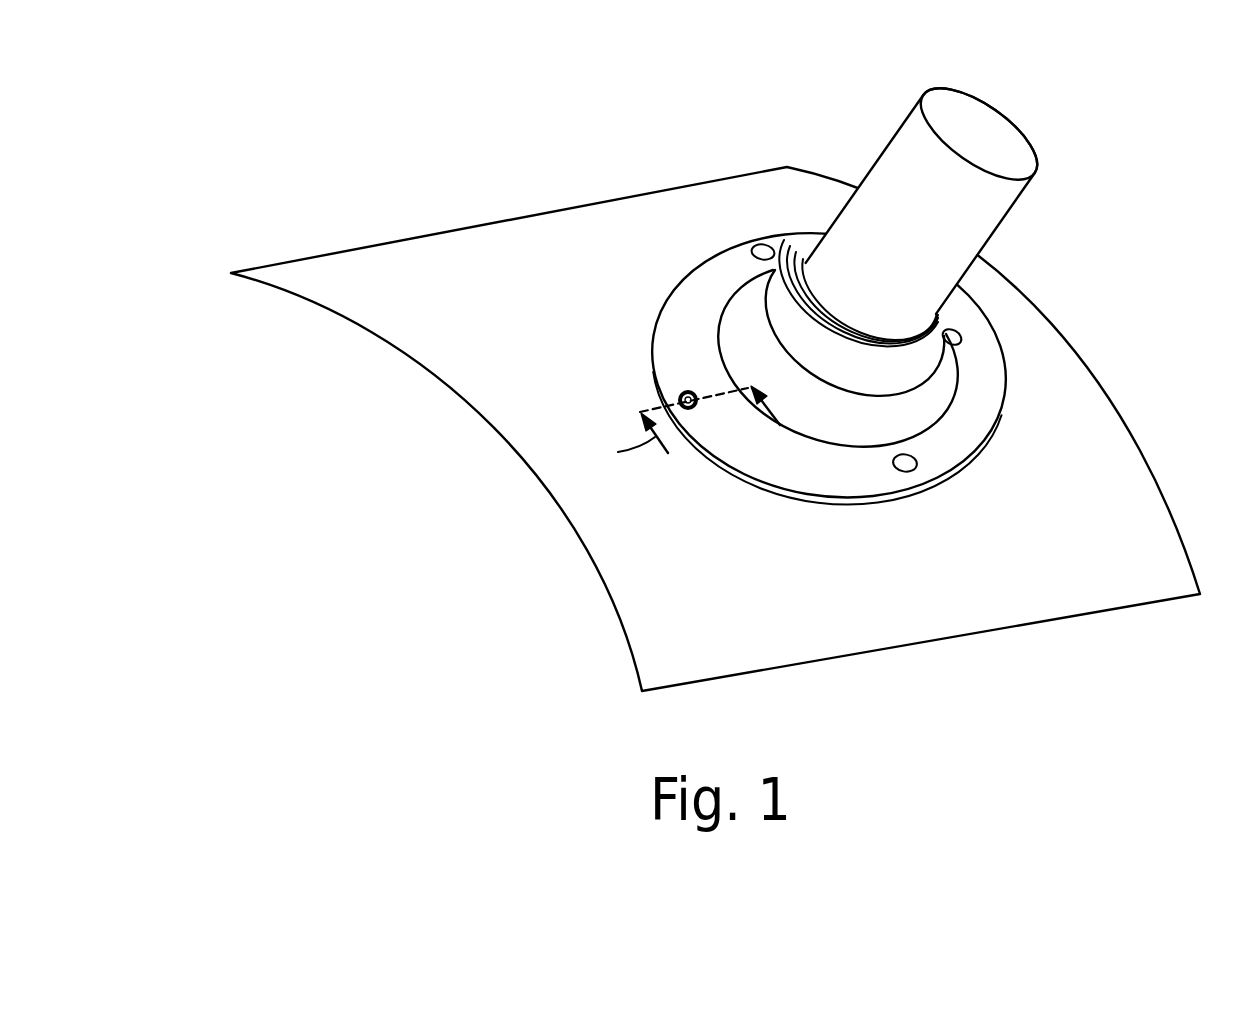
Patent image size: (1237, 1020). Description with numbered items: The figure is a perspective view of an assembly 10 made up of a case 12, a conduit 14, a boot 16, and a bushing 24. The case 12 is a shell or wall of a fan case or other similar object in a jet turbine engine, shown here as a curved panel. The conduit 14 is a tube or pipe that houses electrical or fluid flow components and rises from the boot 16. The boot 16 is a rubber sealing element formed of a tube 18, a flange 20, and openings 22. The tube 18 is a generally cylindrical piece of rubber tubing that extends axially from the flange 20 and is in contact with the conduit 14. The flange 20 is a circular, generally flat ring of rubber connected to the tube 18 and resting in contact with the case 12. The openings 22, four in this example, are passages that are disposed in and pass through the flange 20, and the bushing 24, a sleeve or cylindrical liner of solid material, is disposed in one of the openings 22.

The assembly 10 is at (646, 300).
The case 12 is at (518, 255).
The conduit 14 is at (897, 135).
The boot 16 is at (707, 273).
The tube 18 is at (893, 378).
The flange 20 is at (967, 424).
The openings 22 is at (770, 240).
The bushing 24 is at (684, 393).